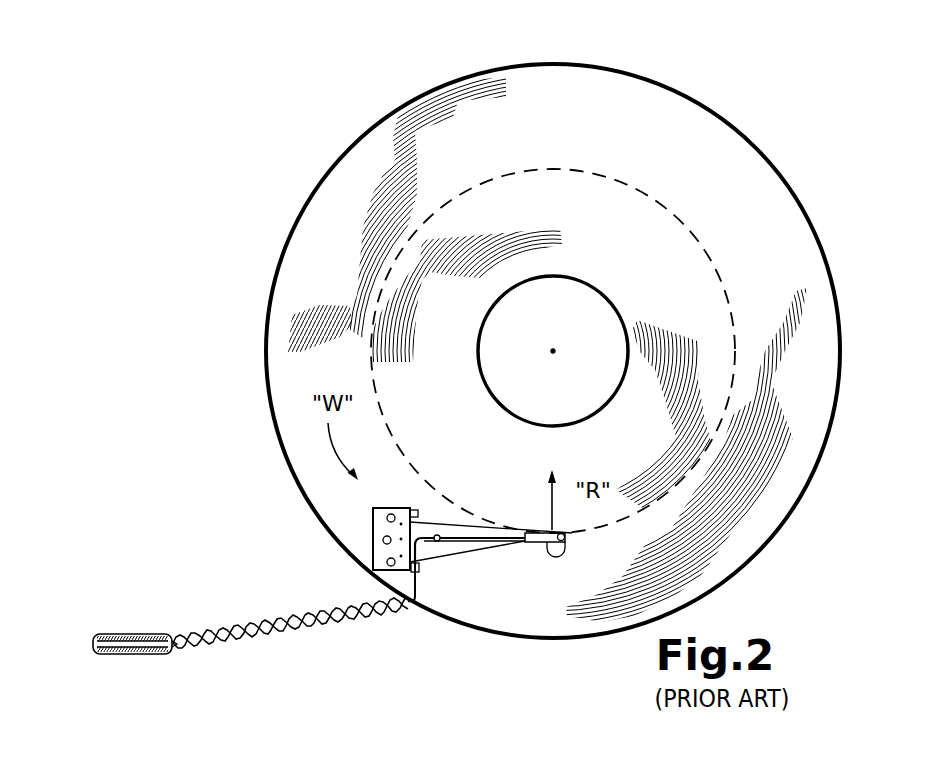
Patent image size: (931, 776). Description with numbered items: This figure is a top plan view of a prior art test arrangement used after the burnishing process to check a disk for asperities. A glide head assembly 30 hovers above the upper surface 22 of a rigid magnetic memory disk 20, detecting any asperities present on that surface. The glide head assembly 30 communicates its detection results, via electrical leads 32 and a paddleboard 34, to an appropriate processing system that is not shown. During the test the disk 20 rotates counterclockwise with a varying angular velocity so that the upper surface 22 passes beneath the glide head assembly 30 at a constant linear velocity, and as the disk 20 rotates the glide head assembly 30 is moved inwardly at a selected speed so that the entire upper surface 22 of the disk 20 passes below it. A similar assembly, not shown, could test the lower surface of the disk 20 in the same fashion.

The rigid magnetic memory disk 20 is at (635, 107).
The upper surface 22 is at (346, 371).
The glide head assembly 30 is at (478, 578).
The electrical leads 32 is at (266, 622).
The paddleboard 34 is at (133, 645).